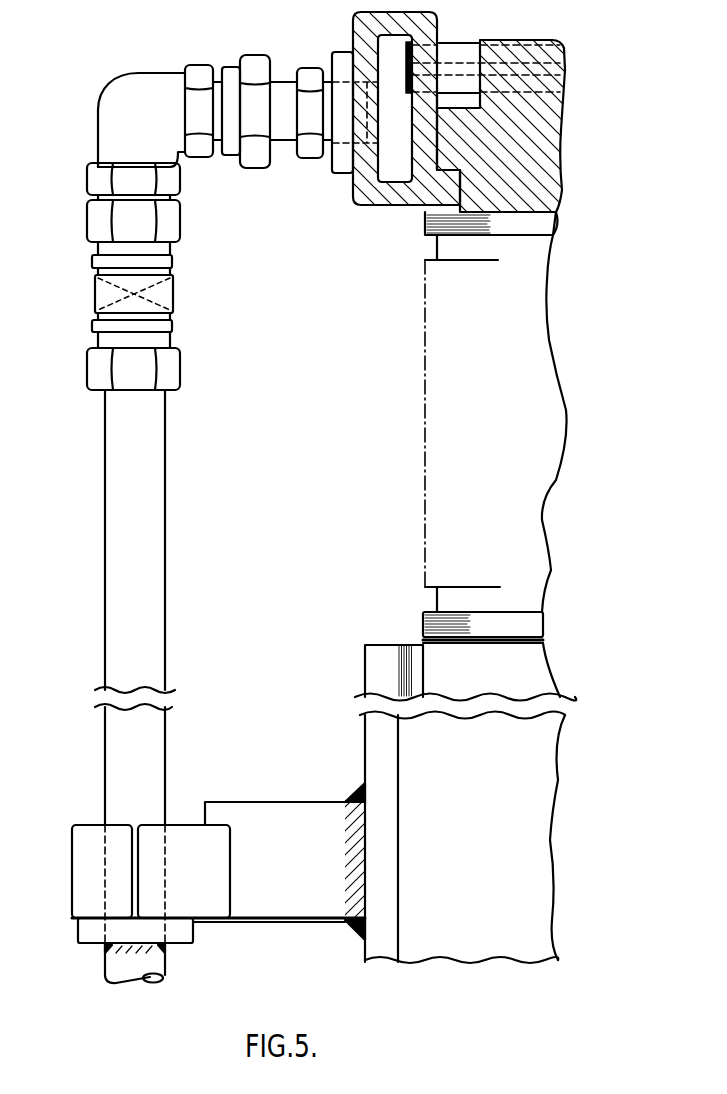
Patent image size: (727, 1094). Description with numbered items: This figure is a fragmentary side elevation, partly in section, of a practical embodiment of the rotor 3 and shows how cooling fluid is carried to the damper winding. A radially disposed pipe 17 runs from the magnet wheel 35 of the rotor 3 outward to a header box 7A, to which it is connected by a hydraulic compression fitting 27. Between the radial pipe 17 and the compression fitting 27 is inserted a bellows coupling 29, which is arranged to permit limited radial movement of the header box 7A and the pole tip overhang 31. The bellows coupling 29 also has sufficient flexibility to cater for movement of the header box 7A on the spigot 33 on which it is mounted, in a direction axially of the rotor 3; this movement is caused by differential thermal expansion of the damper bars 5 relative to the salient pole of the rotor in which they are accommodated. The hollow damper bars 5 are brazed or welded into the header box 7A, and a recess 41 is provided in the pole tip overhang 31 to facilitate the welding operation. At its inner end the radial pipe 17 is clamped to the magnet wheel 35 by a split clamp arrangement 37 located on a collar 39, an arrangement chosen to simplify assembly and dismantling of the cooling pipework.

The rotor 3 is at (441, 424).
The damper bars 5 is at (458, 56).
The header box 7A is at (362, 33).
The radial pipe 17 is at (153, 548).
The hydraulic compression fitting 27 is at (252, 160).
The bellows coupling 29 is at (167, 296).
The pole tip overhang 31 is at (499, 203).
The spigot 33 is at (380, 199).
The magnet wheel 35 is at (440, 657).
The split clamp arrangement 37 is at (86, 833).
The collar 39 is at (188, 932).
The recess 41 is at (472, 104).